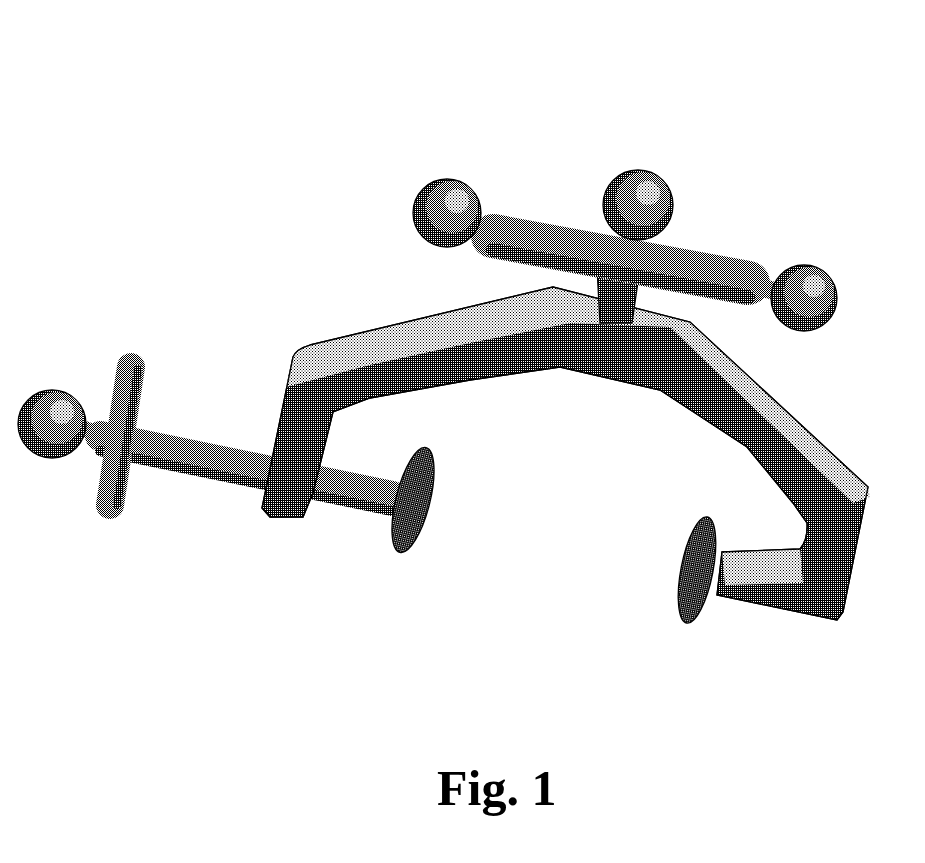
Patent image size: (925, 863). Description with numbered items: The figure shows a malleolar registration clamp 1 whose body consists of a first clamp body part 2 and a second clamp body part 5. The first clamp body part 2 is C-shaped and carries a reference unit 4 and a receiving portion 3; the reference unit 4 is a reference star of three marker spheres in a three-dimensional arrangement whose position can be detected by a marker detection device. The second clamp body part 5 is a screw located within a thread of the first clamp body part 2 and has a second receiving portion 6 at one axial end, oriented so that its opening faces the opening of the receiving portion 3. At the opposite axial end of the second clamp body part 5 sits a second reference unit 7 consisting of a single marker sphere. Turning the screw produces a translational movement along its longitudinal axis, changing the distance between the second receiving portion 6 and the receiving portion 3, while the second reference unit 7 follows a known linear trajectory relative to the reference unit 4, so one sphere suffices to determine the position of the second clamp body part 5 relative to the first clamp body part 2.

The malleolar registration clamp 1 is at (281, 186).
The first clamp body part 2 is at (833, 587).
The receiving portion 3 is at (699, 583).
The reference unit 4 is at (530, 222).
The second clamp body part 5 is at (195, 453).
The second receiving portion 6 is at (405, 530).
The second reference unit 7 is at (62, 403).